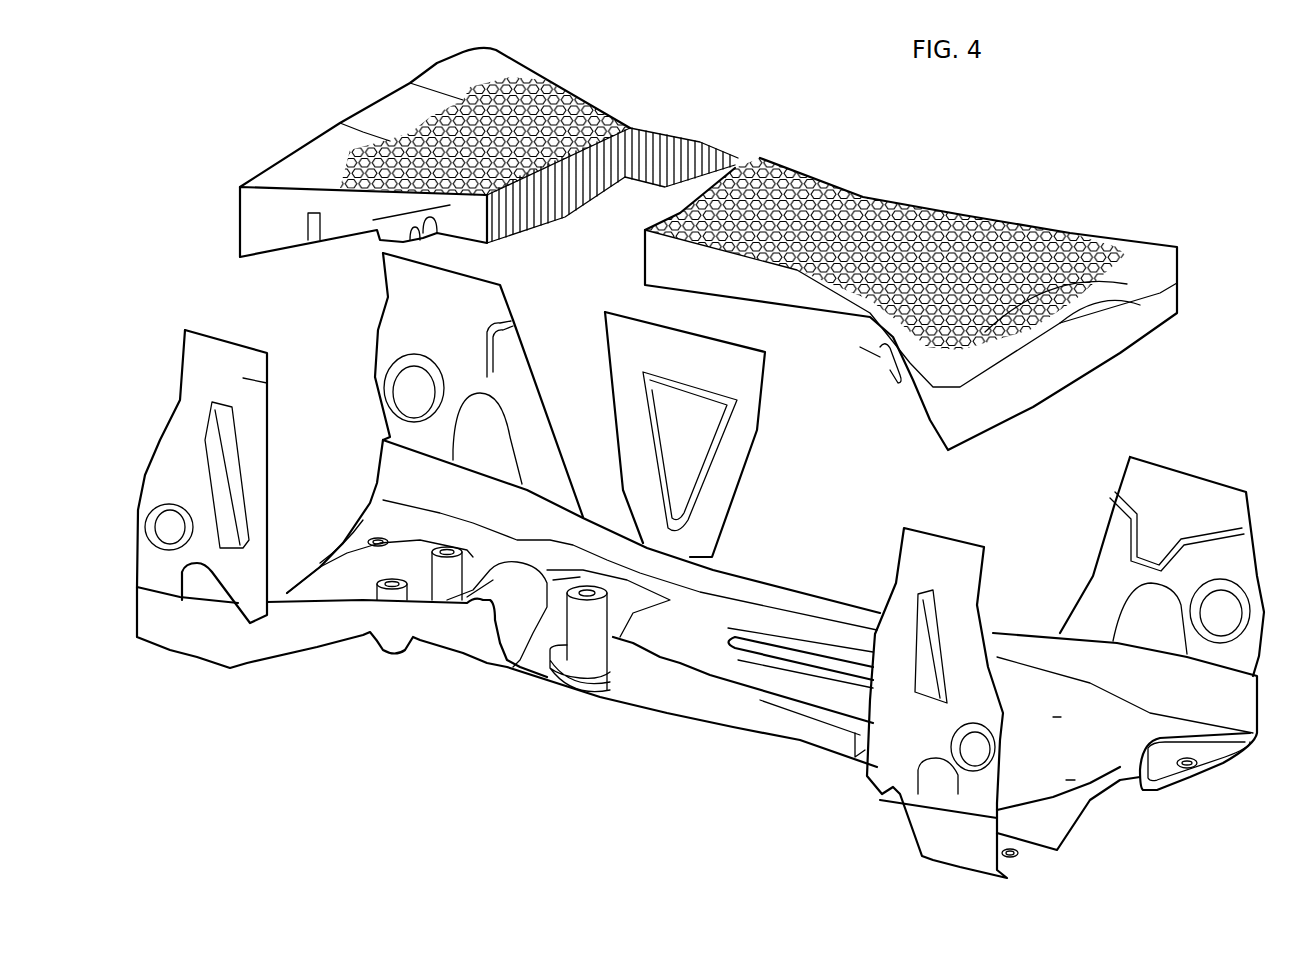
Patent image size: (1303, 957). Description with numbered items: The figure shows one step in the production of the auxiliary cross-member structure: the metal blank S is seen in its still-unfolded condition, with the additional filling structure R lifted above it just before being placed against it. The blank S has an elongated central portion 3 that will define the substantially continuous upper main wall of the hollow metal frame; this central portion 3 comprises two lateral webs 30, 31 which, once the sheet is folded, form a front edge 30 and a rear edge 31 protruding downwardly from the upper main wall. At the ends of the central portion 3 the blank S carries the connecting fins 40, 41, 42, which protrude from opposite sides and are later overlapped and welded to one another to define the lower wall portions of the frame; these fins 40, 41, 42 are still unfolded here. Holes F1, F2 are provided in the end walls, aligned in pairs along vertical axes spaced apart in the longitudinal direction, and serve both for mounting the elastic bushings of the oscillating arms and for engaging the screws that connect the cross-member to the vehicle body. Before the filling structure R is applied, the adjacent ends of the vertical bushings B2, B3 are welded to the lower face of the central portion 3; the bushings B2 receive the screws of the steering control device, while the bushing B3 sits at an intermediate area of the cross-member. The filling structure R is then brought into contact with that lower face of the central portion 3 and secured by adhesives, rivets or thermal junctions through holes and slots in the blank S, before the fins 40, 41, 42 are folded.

The additional filling structure R is at (1060, 212).
The connecting fin 40 is at (193, 398).
The connecting fin 41 is at (497, 301).
The connecting fin 42 is at (727, 452).
The lateral web / rear edge 31 is at (793, 603).
The lateral web / front edge 30 is at (793, 712).
The central portion 3 is at (633, 613).
The metal blank S is at (731, 737).
The bushing B2 is at (395, 581).
The bushing B3 is at (588, 645).
The hole F1 is at (1015, 858).
The hole F2 is at (375, 539).